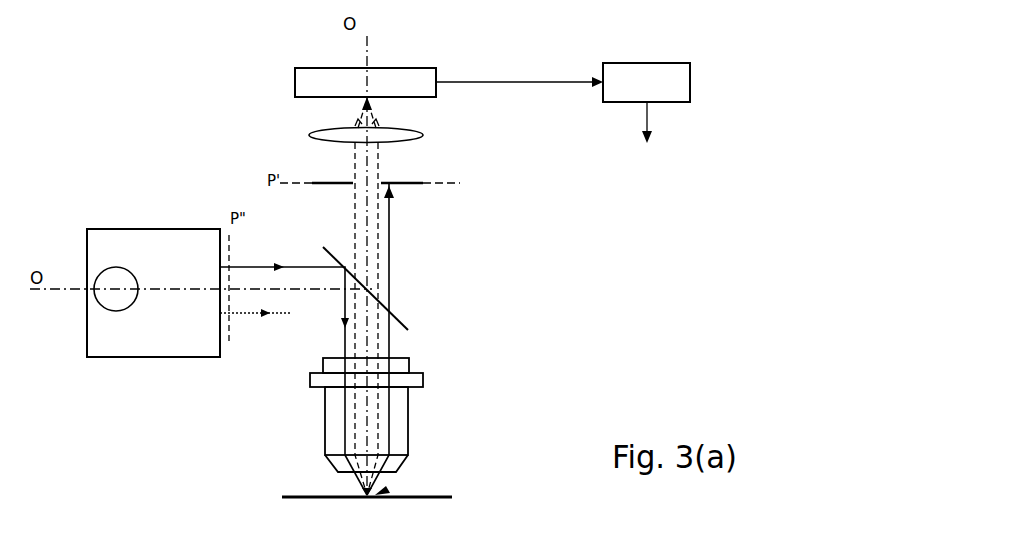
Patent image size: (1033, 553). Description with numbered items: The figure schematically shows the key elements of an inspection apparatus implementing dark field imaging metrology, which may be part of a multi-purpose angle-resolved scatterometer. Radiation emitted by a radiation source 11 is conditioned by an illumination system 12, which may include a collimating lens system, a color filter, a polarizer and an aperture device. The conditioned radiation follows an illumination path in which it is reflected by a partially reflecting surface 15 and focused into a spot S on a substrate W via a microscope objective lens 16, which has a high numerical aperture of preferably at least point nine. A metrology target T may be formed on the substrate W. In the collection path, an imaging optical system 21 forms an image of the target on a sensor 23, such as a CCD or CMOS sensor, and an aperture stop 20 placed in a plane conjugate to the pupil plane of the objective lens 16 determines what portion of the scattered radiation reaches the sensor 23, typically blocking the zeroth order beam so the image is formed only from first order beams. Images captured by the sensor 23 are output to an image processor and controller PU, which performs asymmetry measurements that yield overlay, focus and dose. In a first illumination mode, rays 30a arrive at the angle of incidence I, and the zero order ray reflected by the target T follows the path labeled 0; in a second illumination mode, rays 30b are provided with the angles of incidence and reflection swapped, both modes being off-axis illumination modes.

The radiation source 11 is at (106, 299).
The illumination system 12 is at (107, 229).
The partially reflecting surface 15 is at (400, 318).
The microscope objective lens 16 is at (408, 420).
The aperture stop 20 is at (412, 183).
The imaging optical system 21 is at (415, 140).
The sensor 23 is at (436, 68).
The rays of first illumination mode 30a is at (298, 266).
The rays of second illumination mode 30b is at (277, 316).
The zero order ray 0 is at (393, 398).
The angle of incidence I is at (343, 430).
The spot S is at (362, 493).
The target grating structure T is at (386, 490).
The substrate W is at (290, 498).
The image processor and controller PU is at (633, 95).